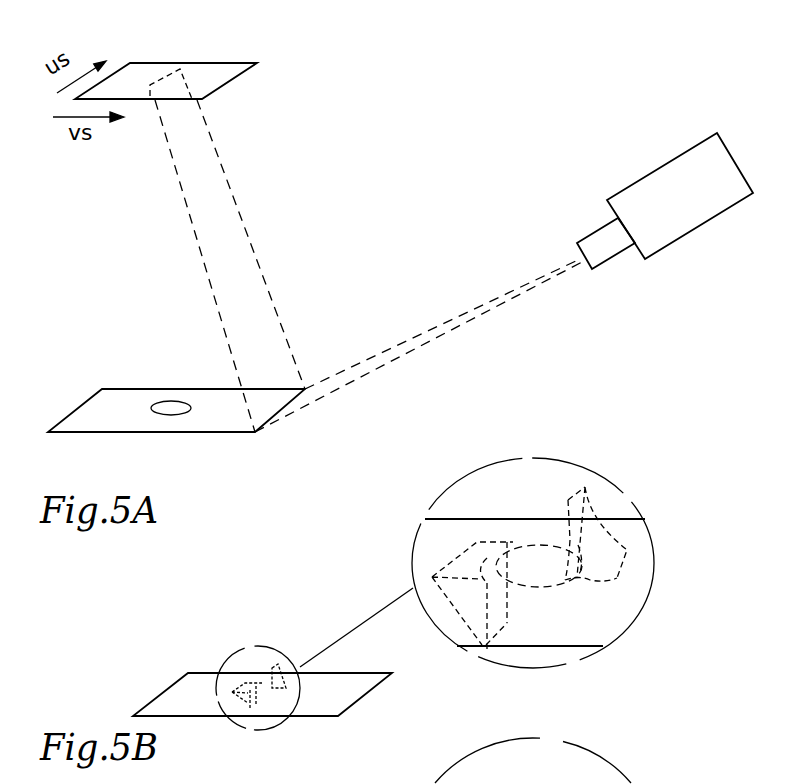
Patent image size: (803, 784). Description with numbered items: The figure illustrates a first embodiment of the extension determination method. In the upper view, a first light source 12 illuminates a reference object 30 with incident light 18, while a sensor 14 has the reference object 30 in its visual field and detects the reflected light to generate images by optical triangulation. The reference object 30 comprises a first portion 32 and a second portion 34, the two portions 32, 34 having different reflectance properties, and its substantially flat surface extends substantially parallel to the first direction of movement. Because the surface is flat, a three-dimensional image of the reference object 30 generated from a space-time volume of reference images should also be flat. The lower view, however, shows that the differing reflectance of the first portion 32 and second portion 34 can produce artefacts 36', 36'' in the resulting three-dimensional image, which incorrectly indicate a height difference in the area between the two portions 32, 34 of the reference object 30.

In FIG. 5A, the first light source 12 is at (635, 198).
In FIG. 5A, the sensor 14 is at (212, 65).
In FIG. 5A, the incident light 18 is at (509, 314).
In FIG. 5A, the reference object 30 is at (156, 360).
In FIG. 5B, the reference object 30 is at (174, 661).
In FIG. 5A, the first portion 32 is at (173, 404).
In FIG. 5A, the second portion 34 is at (88, 416).
In FIG. 5B, the artefact 36' is at (455, 604).
In FIG. 5B, the artefact 36'' is at (638, 543).